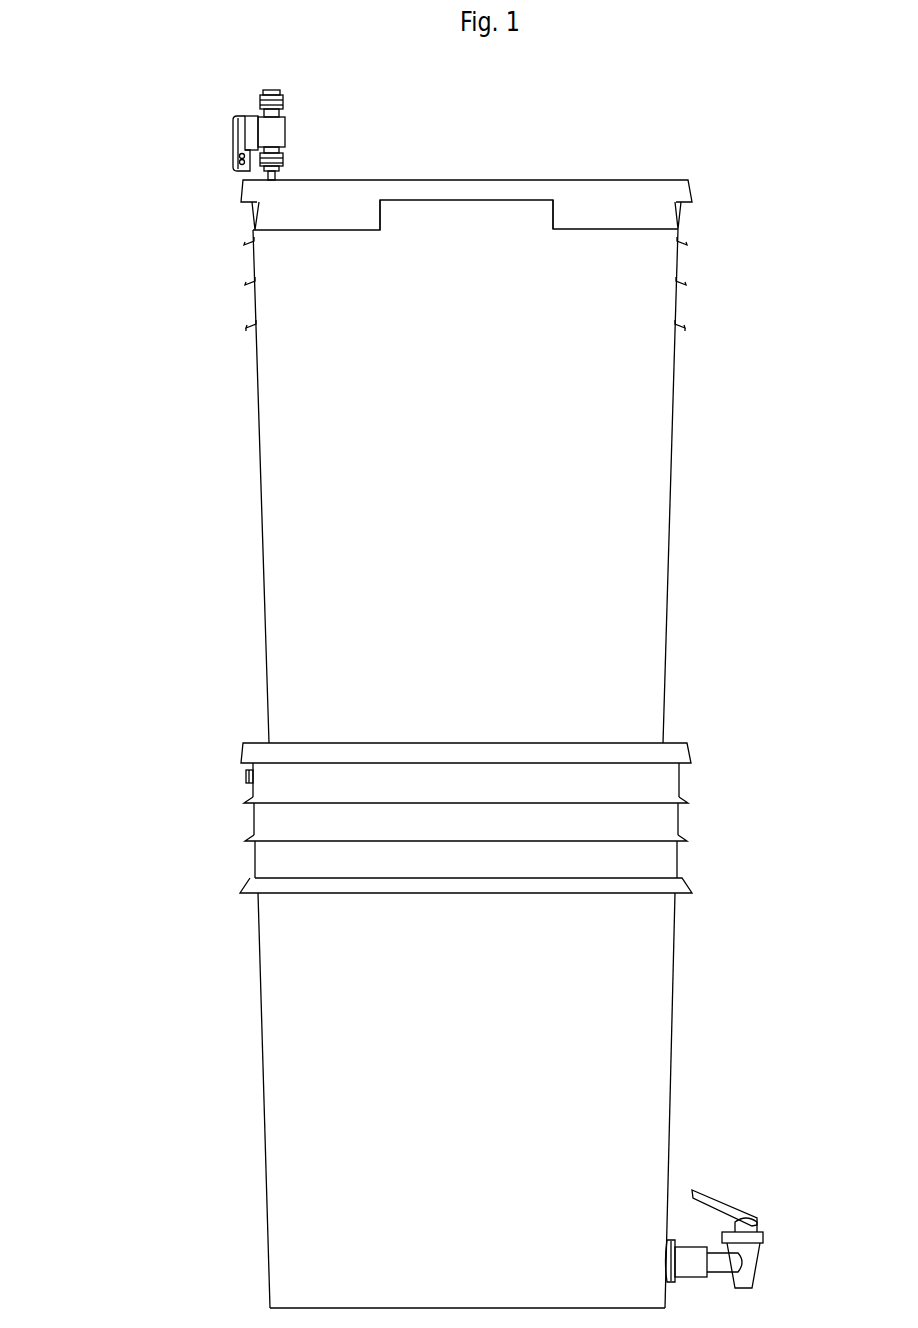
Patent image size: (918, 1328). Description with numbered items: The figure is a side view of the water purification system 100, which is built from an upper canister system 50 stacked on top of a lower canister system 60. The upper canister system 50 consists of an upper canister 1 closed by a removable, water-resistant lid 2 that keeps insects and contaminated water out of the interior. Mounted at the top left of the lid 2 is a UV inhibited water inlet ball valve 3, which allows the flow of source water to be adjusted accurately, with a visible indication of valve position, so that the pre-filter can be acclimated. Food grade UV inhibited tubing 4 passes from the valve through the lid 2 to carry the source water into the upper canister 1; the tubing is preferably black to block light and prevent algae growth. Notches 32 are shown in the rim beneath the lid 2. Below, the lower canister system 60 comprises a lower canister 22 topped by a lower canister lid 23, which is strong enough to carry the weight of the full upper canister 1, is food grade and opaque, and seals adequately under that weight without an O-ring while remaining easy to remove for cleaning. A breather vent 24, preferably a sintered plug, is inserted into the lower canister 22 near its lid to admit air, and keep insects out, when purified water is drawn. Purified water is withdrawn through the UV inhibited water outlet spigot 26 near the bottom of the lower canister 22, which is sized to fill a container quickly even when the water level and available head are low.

The water purification system 100 is at (146, 198).
The upper canister system 50 is at (213, 481).
The upper canister 1 is at (540, 447).
The lid 2 is at (512, 190).
The lid notch 32 is at (380, 230).
The water inlet ball valve 3 is at (284, 131).
The tubing 4 is at (276, 178).
The lower canister system 60 is at (227, 1048).
The lower canister 22 is at (553, 998).
The lower canister lid 23 is at (688, 745).
The breather vent 24 is at (247, 778).
The water outlet spigot 26 is at (765, 1242).